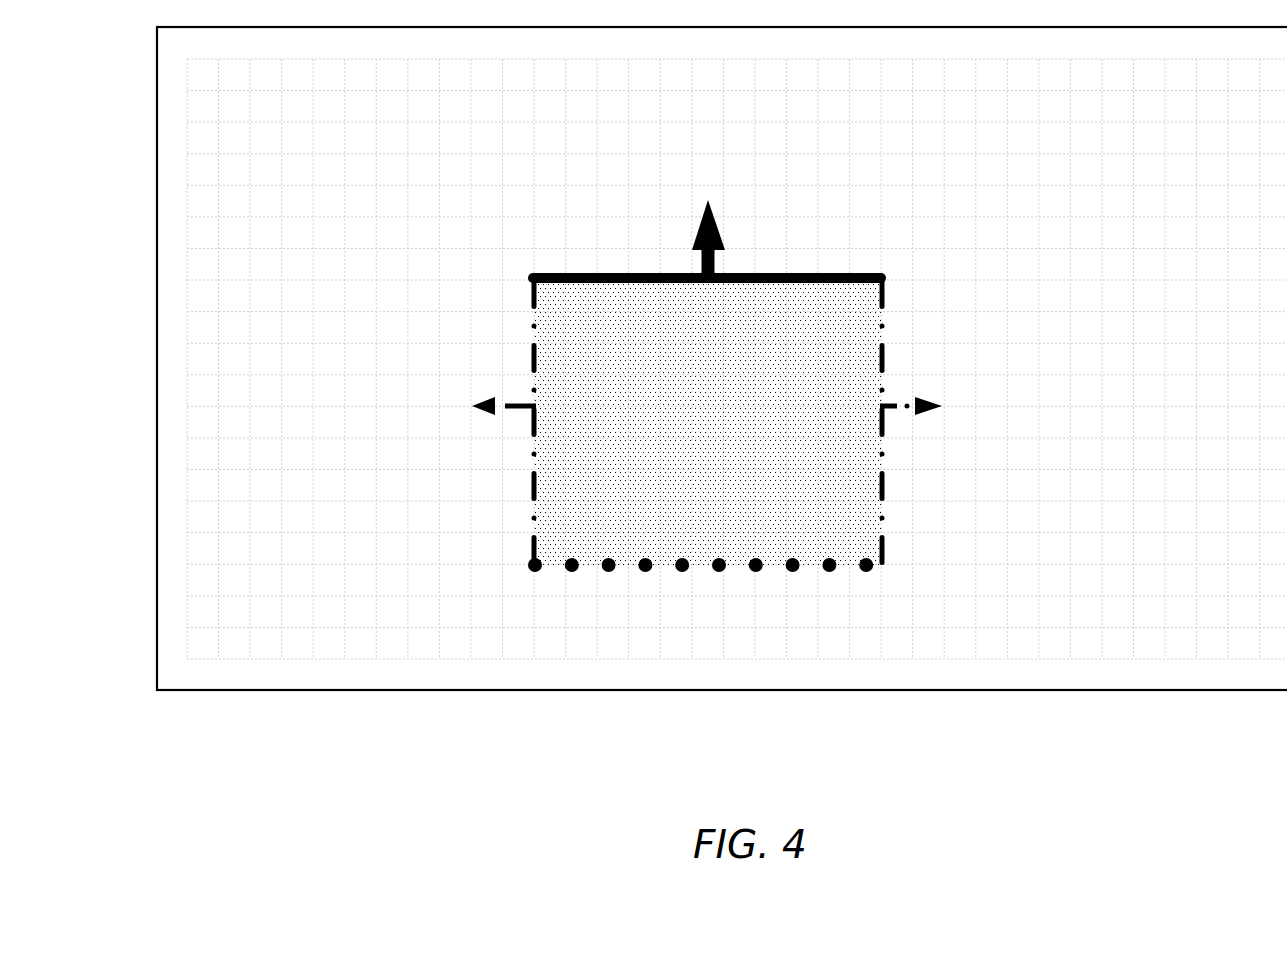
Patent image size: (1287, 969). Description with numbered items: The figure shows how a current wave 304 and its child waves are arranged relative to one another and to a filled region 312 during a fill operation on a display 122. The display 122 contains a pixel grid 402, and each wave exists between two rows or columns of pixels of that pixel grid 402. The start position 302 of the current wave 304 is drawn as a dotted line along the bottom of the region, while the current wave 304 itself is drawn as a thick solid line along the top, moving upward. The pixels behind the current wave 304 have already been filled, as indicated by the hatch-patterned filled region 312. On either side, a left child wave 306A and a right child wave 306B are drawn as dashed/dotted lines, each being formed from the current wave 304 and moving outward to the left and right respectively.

The display 122 is at (441, 690).
The pixel grid 402 is at (1055, 625).
The start position 302 is at (756, 572).
The current wave 304 is at (787, 275).
The left child wave 306A is at (534, 484).
The right child wave 306B is at (885, 353).
The filled region 312 is at (803, 470).